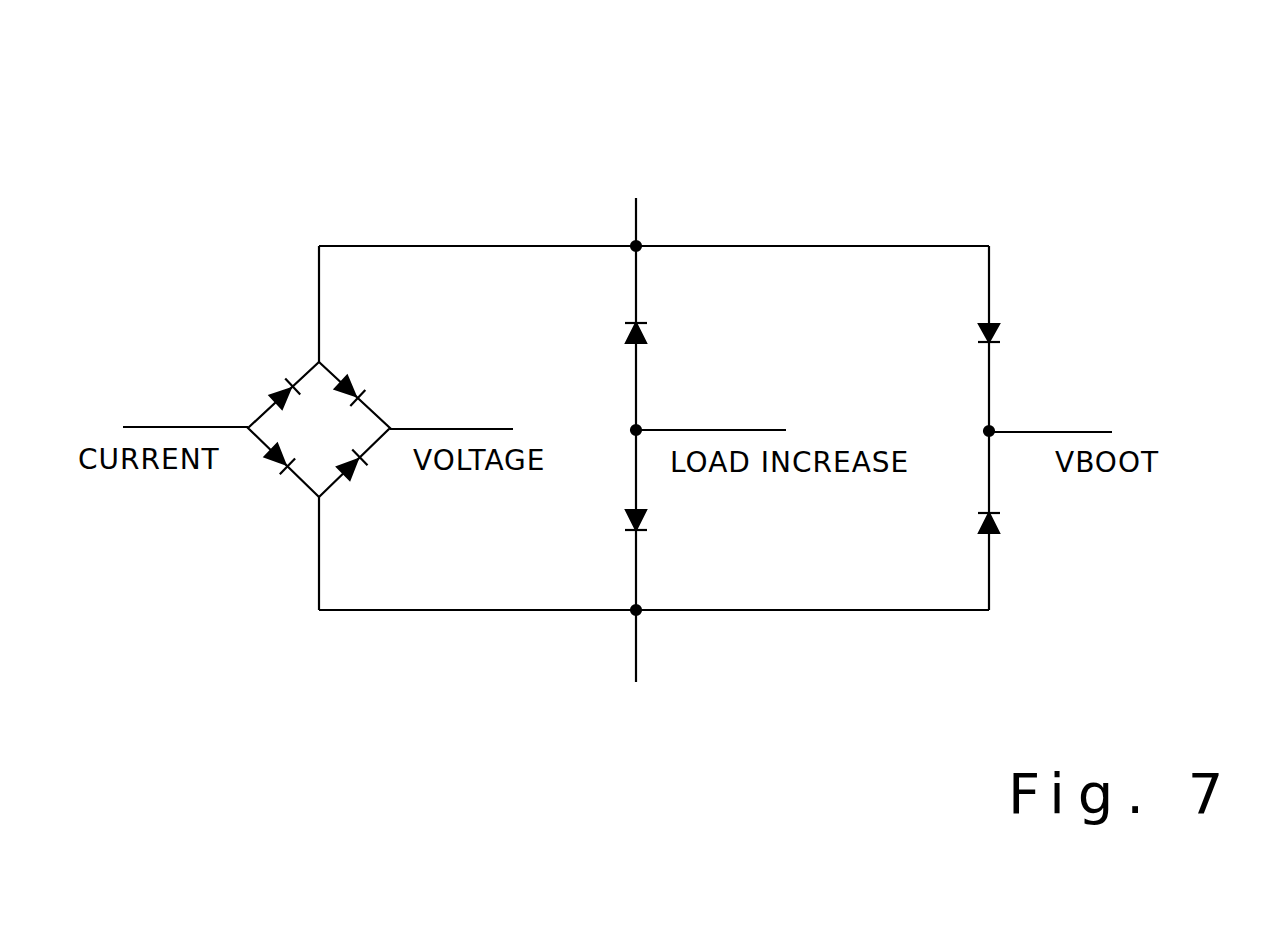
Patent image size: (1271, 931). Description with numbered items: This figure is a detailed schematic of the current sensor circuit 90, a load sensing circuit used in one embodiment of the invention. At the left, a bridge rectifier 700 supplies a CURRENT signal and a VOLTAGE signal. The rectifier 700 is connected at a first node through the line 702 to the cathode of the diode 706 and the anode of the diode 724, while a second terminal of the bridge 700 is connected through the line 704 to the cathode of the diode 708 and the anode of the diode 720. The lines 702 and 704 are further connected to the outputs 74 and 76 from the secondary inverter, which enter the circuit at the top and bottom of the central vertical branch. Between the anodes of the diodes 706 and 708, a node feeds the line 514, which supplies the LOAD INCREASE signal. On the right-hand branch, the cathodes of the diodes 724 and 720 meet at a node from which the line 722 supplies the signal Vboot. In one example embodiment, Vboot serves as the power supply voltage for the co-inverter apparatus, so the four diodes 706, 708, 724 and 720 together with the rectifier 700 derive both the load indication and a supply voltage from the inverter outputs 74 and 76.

The current sensor circuit 90 is at (1040, 132).
The rectifier 700 is at (300, 380).
The line 702 is at (505, 246).
The line 704 is at (462, 610).
The output 74 is at (637, 217).
The output 76 is at (636, 652).
The diode 706 is at (633, 331).
The diode 708 is at (645, 515).
The line 514 is at (727, 430).
The diode 724 is at (992, 322).
The diode 720 is at (993, 535).
The line 722 is at (1092, 432).